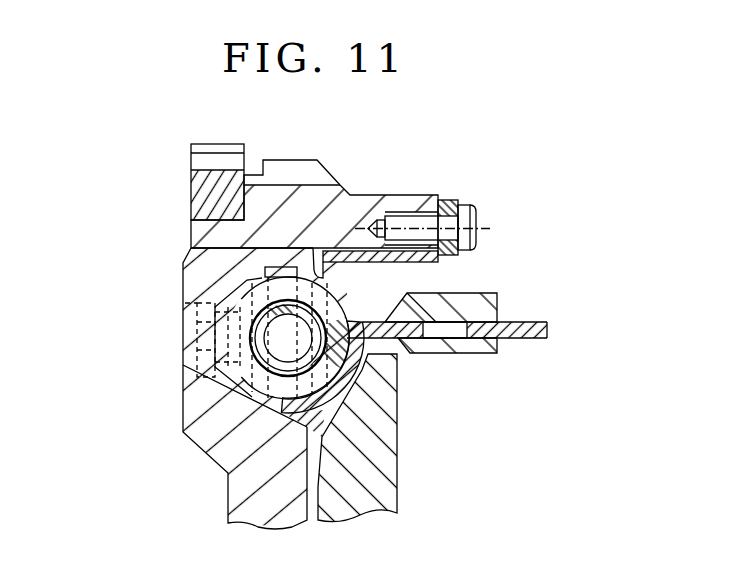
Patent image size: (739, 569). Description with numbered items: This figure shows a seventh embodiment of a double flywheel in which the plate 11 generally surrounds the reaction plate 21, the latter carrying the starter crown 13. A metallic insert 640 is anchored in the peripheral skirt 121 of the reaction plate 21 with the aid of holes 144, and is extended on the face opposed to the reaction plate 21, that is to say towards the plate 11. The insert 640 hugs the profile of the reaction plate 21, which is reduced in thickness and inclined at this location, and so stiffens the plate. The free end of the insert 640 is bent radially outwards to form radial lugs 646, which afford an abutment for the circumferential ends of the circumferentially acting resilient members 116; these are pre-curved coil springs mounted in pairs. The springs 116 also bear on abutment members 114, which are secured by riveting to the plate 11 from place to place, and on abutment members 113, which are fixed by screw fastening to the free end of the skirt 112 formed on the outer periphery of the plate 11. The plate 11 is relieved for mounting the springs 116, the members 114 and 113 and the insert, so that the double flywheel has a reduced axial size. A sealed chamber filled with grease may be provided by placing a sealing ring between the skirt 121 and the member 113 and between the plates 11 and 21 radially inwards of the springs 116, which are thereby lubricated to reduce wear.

The starter crown 13 is at (191, 186).
The radial lugs 646 is at (191, 248).
The plate 11 is at (183, 287).
The skirt 112 is at (395, 195).
The abutment members 113 is at (447, 198).
The abutment members 114 is at (215, 335).
The circumferentially acting resilient members 116 is at (259, 371).
The peripheral skirt 121 is at (457, 293).
The insert 640 is at (517, 338).
The holes 144 is at (458, 338).
The reaction plate 21 is at (397, 480).